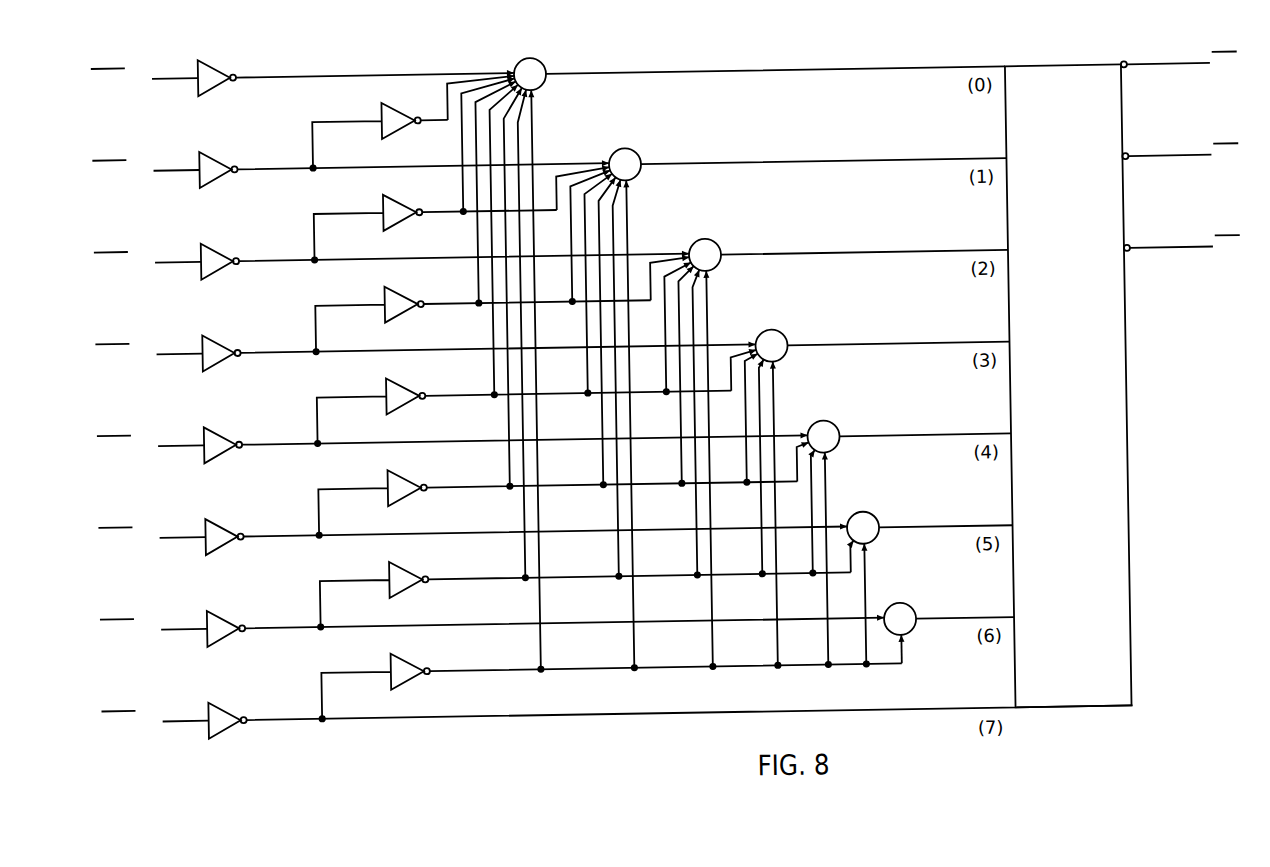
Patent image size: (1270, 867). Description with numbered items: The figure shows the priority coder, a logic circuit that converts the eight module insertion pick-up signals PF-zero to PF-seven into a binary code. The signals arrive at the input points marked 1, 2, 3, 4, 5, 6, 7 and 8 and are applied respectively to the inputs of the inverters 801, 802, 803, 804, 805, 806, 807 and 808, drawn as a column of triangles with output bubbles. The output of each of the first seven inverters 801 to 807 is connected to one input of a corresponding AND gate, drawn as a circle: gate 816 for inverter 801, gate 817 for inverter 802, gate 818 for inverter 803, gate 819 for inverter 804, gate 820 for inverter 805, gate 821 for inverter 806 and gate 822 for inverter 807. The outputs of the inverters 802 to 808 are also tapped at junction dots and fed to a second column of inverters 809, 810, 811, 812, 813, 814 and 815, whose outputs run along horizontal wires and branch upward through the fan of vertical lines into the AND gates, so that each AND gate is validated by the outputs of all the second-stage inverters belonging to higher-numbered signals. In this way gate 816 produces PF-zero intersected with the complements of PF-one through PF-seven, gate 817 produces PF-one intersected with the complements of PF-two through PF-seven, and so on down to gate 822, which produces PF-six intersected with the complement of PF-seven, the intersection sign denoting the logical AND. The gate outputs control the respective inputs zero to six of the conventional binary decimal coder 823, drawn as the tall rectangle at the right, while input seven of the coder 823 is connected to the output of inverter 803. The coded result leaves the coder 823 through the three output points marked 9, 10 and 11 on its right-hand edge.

The input terminal PF0 1 is at (144, 78).
The input terminal PF1 2 is at (145, 170).
The input terminal PF2 3 is at (147, 262).
The input terminal PF3 4 is at (148, 354).
The input terminal PF4 5 is at (150, 445).
The input terminal PF5 6 is at (151, 537).
The input terminal PF6 7 is at (153, 629).
The input terminal PF7 8 is at (154, 721).
The output terminal A0 9 is at (1179, 72).
The output terminal A1 10 is at (1180, 164).
The output terminal A2 11 is at (1182, 256).
The inverter 801 is at (213, 69).
The inverter 802 is at (213, 160).
The inverter 803 is at (213, 252).
The inverter 804 is at (213, 344).
The inverter 805 is at (213, 436).
The inverter 806 is at (213, 528).
The inverter 807 is at (213, 620).
The inverter 808 is at (213, 711).
The inverter 809 is at (380, 116).
The inverter 810 is at (380, 207).
The inverter 811 is at (380, 299).
The inverter 812 is at (380, 391).
The inverter 813 is at (380, 483).
The inverter 814 is at (380, 575).
The inverter 815 is at (380, 666).
The AND gate 816 is at (542, 84).
The AND gate 817 is at (636, 176).
The AND gate 818 is at (714, 268).
The AND gate 819 is at (779, 360).
The AND gate 820 is at (830, 451).
The AND gate 821 is at (868, 543).
The AND gate 822 is at (903, 635).
The coder 823 is at (1070, 716).